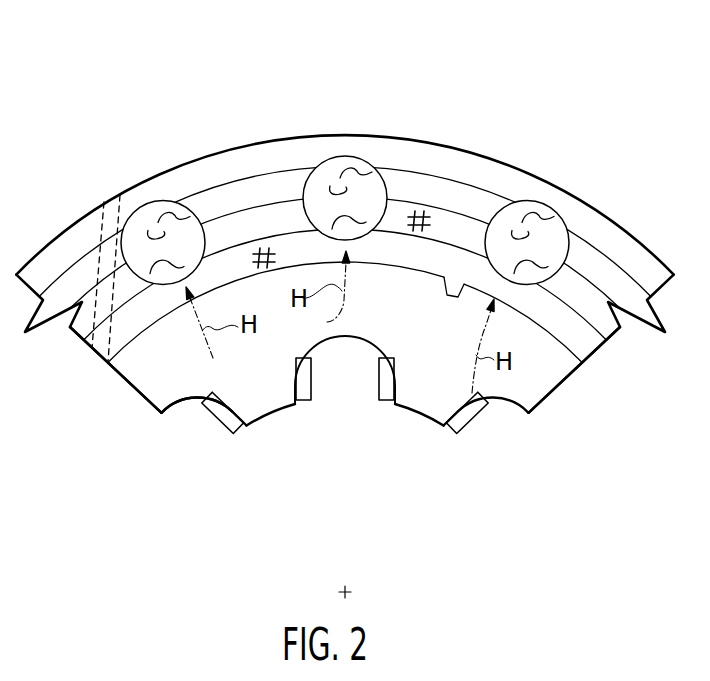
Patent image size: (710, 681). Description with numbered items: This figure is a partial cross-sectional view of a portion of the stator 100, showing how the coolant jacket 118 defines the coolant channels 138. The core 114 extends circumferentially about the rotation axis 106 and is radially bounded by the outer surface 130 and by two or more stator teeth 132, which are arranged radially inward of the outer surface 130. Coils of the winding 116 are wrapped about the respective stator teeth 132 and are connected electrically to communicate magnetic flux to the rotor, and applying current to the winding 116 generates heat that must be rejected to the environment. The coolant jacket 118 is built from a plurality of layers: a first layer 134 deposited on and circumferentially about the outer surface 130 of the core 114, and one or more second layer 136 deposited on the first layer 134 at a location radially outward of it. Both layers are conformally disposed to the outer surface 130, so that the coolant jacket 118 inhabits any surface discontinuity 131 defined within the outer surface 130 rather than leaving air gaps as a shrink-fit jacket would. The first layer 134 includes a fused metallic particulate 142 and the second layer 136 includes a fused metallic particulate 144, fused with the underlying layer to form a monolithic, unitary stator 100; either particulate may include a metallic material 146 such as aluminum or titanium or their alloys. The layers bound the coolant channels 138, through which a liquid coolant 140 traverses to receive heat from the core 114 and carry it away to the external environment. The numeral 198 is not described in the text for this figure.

The stator 100 is at (100, 588).
The rotation axis 106 is at (352, 590).
The core 114 is at (126, 381).
The winding 116 is at (212, 412).
The coolant jacket 118 is at (533, 132).
The outer surface 130 is at (437, 275).
The surface discontinuity 131 is at (447, 298).
The stator teeth 132 is at (261, 404).
The first layer 134 is at (227, 267).
The second layer 136 is at (470, 192).
The coolant channels 138 is at (147, 203).
The liquid coolant 140 is at (187, 210).
The fused metallic particulate 142 is at (263, 232).
The fused metallic particulate 144 is at (415, 197).
The metallic material 146 is at (89, 297).
The interface layer 198 is at (530, 335).